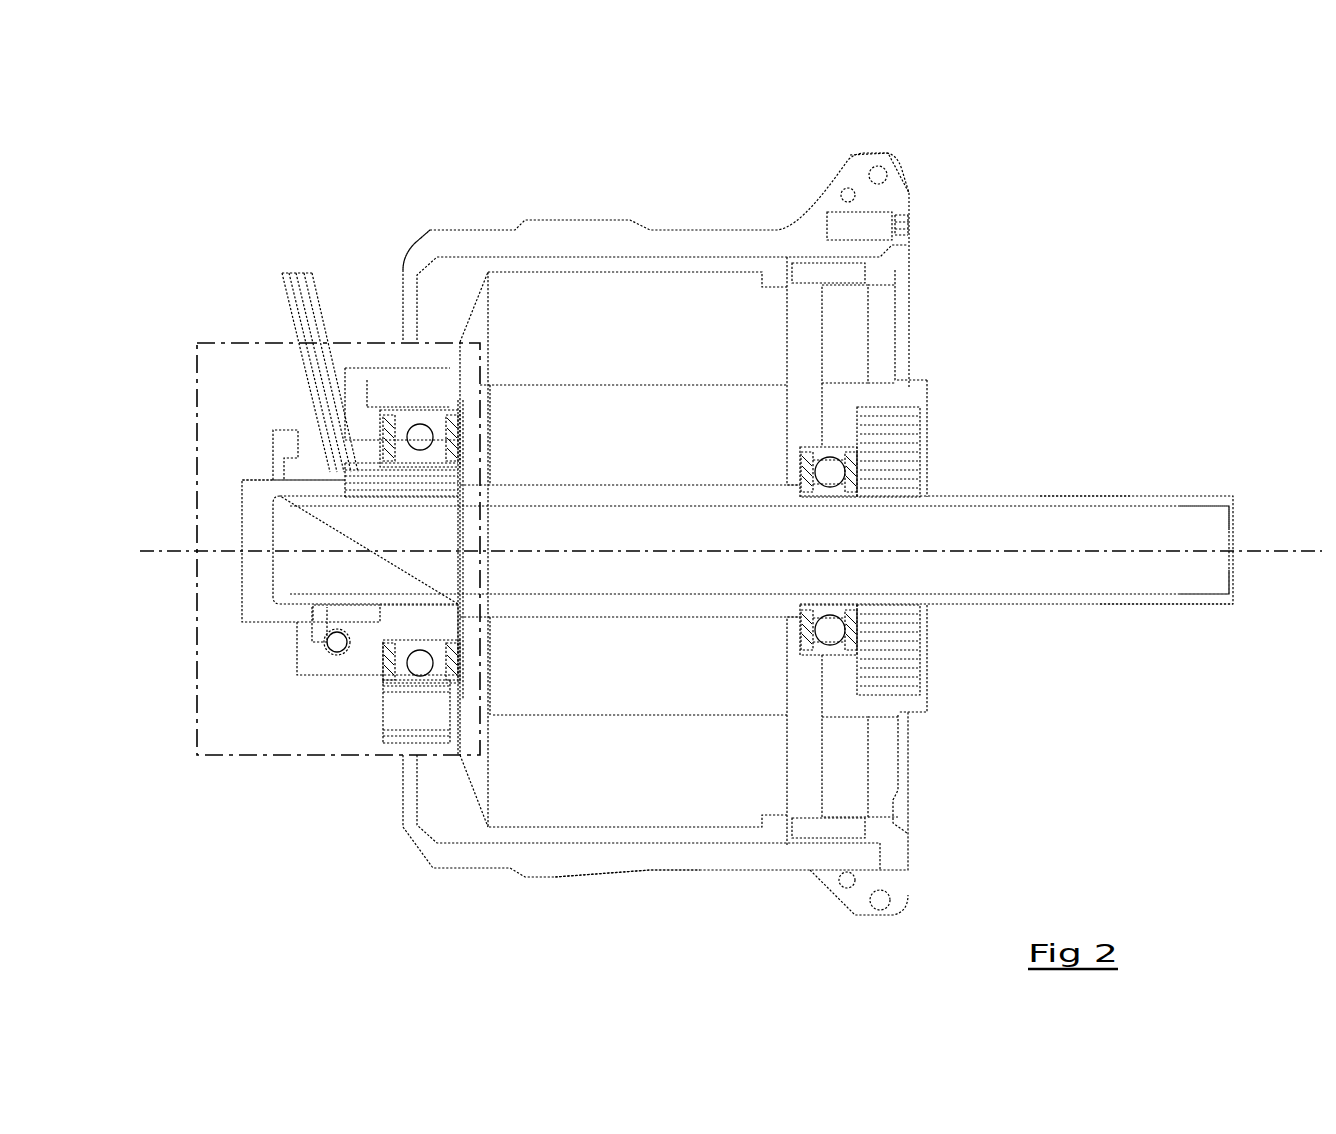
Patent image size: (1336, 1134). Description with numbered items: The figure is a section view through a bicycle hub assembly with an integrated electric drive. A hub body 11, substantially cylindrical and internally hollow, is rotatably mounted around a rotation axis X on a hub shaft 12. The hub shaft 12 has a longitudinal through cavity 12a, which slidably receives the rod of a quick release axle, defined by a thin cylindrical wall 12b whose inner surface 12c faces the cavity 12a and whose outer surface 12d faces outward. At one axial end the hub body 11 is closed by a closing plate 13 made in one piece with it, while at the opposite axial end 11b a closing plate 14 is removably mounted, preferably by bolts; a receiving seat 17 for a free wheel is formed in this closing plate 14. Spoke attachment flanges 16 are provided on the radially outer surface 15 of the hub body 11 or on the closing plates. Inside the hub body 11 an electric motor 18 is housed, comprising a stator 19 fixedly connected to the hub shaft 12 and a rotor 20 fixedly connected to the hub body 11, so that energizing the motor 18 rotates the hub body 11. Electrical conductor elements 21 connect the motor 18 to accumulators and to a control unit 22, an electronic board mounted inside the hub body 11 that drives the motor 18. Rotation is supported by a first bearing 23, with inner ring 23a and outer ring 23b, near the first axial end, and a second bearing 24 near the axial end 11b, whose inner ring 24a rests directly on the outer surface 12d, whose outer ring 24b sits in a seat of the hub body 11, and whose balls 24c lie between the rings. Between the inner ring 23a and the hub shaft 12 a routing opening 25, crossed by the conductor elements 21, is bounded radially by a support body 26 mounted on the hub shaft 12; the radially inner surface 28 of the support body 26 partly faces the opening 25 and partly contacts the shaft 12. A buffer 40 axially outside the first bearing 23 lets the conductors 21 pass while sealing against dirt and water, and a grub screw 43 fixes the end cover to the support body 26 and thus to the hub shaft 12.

The hub body 11 is at (617, 232).
The axial end 11b is at (913, 263).
The hub shaft 12 is at (1112, 490).
The longitudinal through cavity 12a is at (1203, 575).
The cylindrical wall 12b is at (1153, 600).
The inner surface 12c is at (1163, 523).
The outer surface 12d is at (1082, 493).
The closing plate 13 is at (407, 255).
The closing plate 14 is at (885, 340).
The radially outer surface 15 is at (652, 873).
The spoke attachment flanges 16 is at (873, 167).
The receiving seat 17 is at (907, 655).
The electric motor 18 is at (733, 290).
The stator 19 is at (578, 667).
The rotor 20 is at (685, 290).
The electrical conductor elements 21 is at (282, 282).
The control unit 22 is at (477, 780).
The first bearing 23 is at (416, 410).
The inner ring 23a is at (409, 642).
The outer ring 23b is at (413, 680).
The second bearing 24 is at (837, 446).
The inner ring 24a is at (843, 612).
The outer ring 24b is at (842, 648).
The balls 24c is at (823, 632).
The routing opening 25 is at (347, 482).
The support body 26 is at (366, 461).
The radially inner surface 28 is at (340, 605).
The buffer 40 is at (355, 440).
The grub screw 43 is at (327, 646).
The rotation axis X is at (1292, 554).